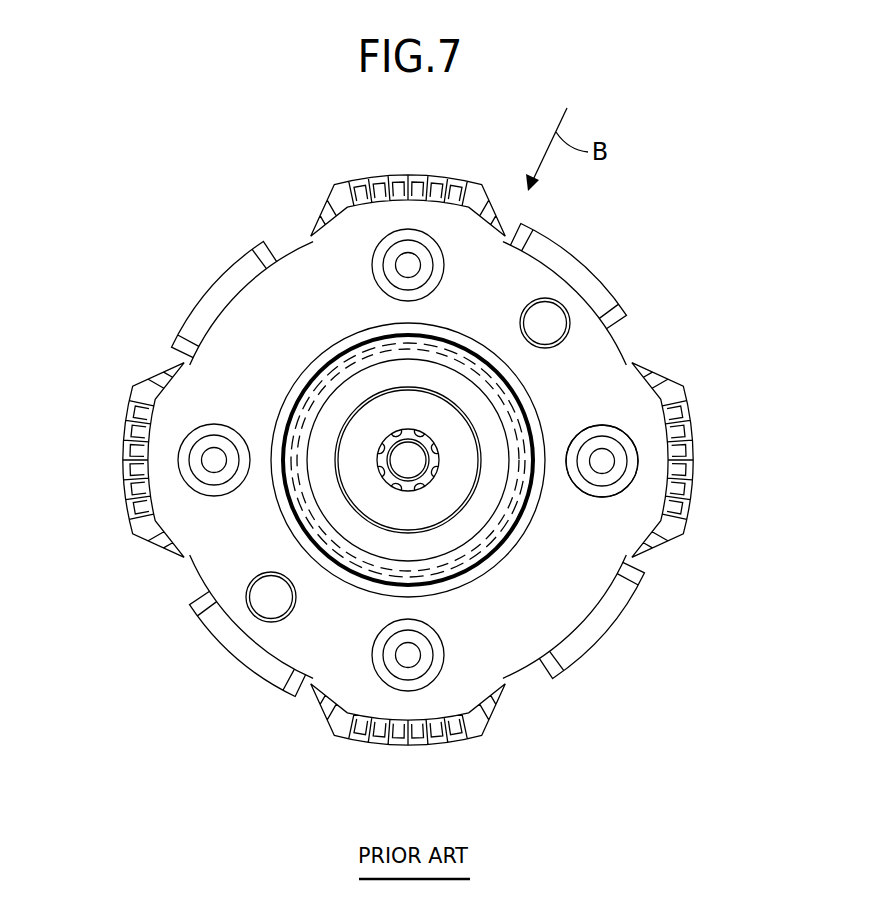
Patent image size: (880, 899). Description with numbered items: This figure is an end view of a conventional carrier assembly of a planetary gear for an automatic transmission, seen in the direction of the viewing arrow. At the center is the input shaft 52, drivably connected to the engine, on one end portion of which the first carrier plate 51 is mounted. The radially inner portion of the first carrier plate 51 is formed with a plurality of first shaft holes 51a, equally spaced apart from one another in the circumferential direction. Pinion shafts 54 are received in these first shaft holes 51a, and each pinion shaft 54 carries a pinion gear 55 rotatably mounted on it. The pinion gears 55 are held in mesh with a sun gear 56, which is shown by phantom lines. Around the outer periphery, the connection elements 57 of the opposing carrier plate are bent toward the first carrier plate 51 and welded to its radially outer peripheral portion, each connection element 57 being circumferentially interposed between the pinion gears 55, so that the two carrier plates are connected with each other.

The first carrier plate 51 is at (600, 353).
The first shaft hole 51a is at (600, 428).
The input shaft 52 is at (353, 393).
The pinion shaft 54 is at (423, 255).
The pinion gear 55 is at (374, 181).
The sun gear 56 is at (478, 567).
The connection element 57 is at (236, 244).